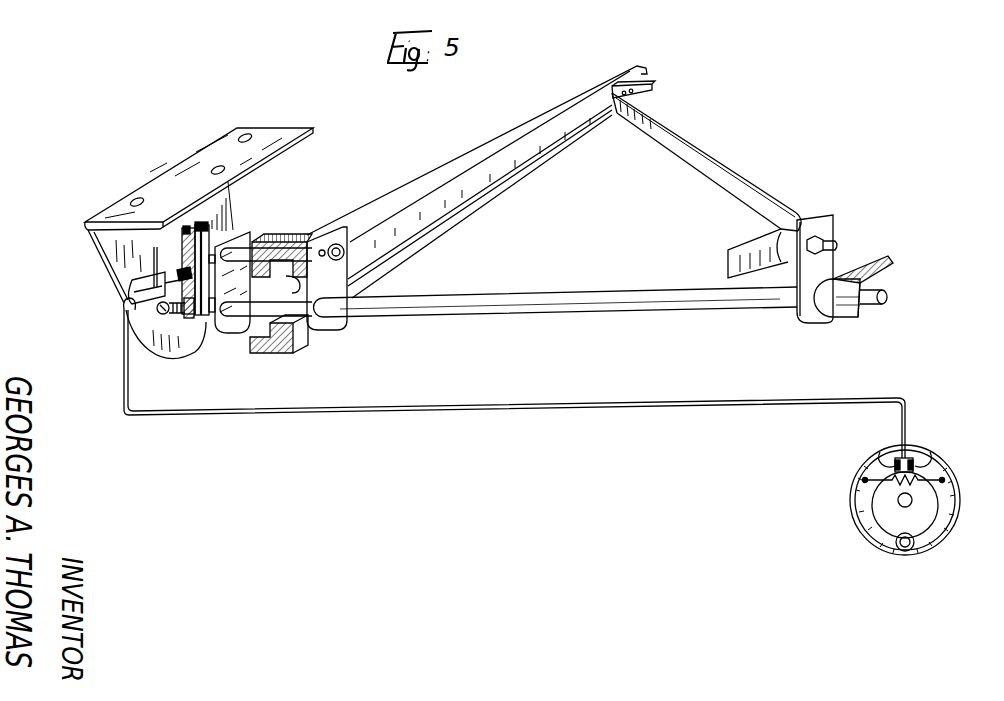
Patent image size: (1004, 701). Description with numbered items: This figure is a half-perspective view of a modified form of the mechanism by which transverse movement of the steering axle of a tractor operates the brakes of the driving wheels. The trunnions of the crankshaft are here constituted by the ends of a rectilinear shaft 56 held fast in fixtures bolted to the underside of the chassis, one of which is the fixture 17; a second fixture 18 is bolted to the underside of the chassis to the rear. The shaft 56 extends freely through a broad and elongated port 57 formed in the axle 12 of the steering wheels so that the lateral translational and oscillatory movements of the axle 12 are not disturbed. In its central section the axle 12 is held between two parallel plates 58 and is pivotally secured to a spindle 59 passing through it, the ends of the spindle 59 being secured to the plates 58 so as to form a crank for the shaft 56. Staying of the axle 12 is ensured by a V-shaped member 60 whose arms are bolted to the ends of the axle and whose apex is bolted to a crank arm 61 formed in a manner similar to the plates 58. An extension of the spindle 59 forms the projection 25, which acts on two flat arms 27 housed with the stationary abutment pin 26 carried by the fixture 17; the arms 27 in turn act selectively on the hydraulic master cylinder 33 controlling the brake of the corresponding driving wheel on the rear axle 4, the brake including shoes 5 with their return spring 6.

The rear axle 4 is at (913, 500).
The shoes 5 is at (865, 525).
The return spring 6 is at (878, 484).
The axle 12 is at (467, 211).
The fixture 17 is at (113, 248).
The fixture 18 is at (880, 281).
The projection 25 is at (220, 242).
The abutment pin 26 is at (199, 223).
The flat arms 27 is at (186, 226).
The master cylinder 33 is at (124, 297).
The rectilinear shaft 56 is at (472, 309).
The port 57 is at (357, 292).
The parallel plates 58 is at (264, 233).
The spindle 59 is at (312, 230).
The V-shaped member 60 is at (700, 167).
The crank arm 61 is at (825, 229).